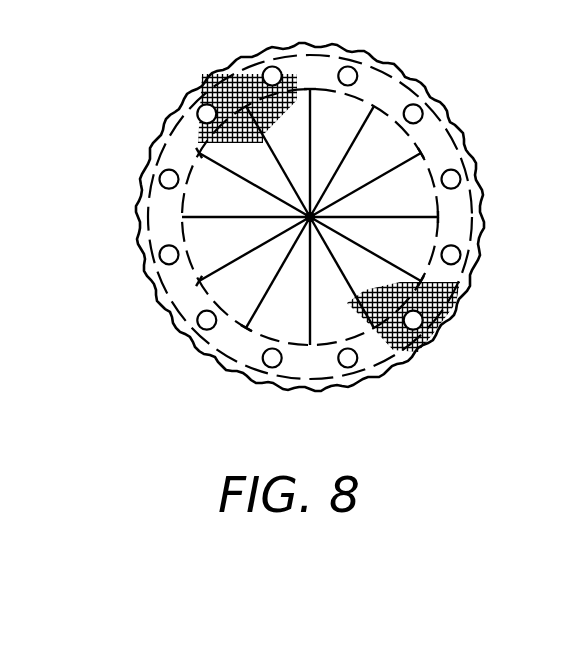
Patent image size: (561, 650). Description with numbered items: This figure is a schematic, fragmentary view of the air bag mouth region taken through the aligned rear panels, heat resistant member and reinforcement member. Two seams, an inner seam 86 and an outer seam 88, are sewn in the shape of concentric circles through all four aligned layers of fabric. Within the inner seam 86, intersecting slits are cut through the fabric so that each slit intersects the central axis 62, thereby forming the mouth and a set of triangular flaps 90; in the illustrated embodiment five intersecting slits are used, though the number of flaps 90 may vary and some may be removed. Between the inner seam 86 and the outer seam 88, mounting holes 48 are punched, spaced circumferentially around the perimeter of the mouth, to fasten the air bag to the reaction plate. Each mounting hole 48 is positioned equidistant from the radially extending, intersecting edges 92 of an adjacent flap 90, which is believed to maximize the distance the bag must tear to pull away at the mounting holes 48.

The mounting holes 48 is at (159, 255).
The central axis 62 is at (355, 168).
The inner seam 86 is at (435, 161).
The outer seam 88 is at (462, 228).
The flaps 90 is at (227, 193).
The intersecting edges 92 is at (248, 299).